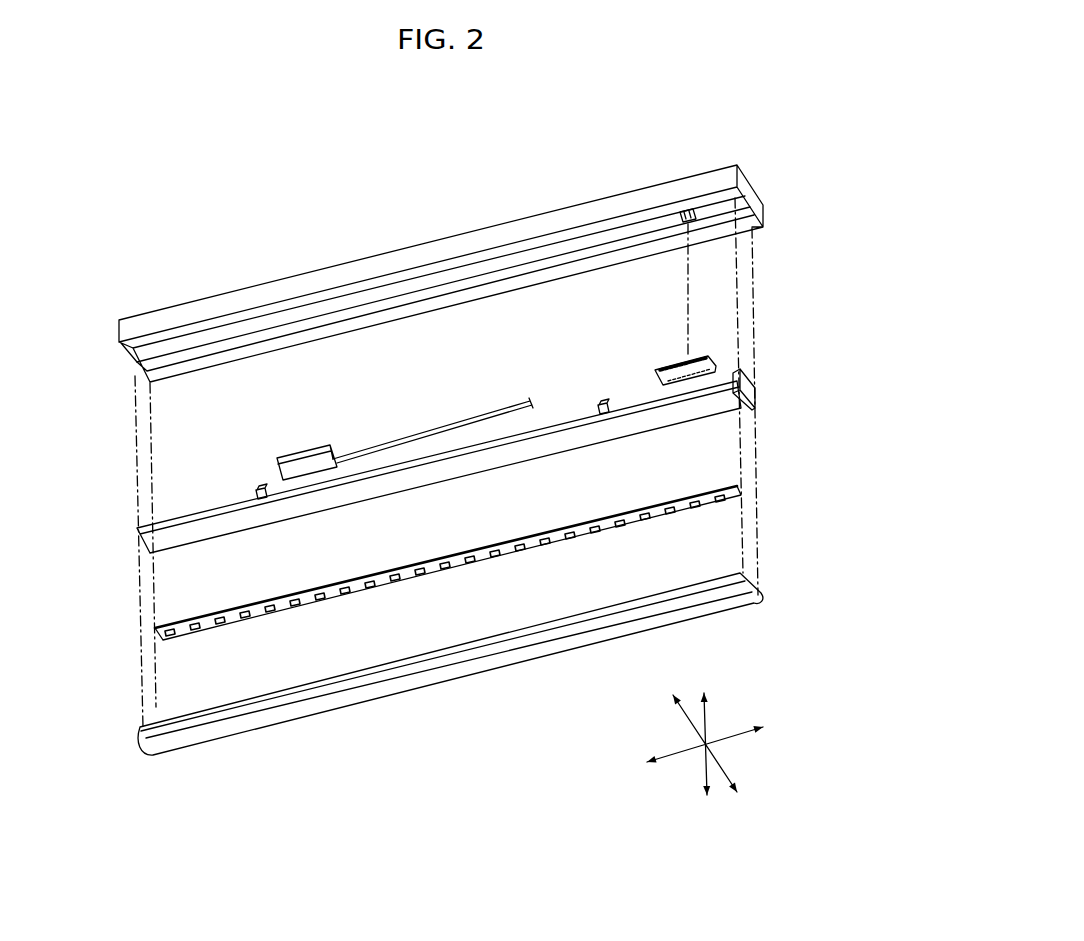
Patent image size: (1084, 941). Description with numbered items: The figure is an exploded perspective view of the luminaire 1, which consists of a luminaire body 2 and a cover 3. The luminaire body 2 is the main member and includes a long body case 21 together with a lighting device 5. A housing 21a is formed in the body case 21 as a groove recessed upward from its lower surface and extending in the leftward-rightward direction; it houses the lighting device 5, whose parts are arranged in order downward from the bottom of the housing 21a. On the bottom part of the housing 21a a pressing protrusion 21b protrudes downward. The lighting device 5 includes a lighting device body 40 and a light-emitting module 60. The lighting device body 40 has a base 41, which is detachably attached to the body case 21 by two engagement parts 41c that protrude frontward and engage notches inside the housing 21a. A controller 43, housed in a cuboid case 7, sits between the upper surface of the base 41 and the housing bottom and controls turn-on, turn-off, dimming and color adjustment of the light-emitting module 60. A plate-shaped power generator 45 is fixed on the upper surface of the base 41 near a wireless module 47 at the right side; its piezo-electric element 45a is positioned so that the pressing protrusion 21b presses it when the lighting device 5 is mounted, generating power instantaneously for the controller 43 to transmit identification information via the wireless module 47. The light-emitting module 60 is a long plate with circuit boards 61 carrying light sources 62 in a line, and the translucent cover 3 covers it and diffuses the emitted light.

The luminaire 1 is at (729, 122).
The luminaire body 2 is at (858, 390).
The cover 3 is at (412, 656).
The lighting device 5 is at (823, 405).
The case 7 is at (319, 436).
The body case 21 is at (758, 227).
The housing 21a is at (486, 272).
The pressing protrusion 21b is at (690, 208).
The lighting device body 40 is at (759, 416).
The base 41 is at (558, 422).
The engagement parts 41c is at (259, 488).
The controller 43 is at (327, 450).
The power generator 45 is at (655, 368).
The piezo-electric element 45a is at (678, 363).
The wireless module 47 is at (757, 385).
The light-emitting module 60 is at (734, 481).
The circuit board 61 is at (641, 508).
The light sources 62 is at (489, 545).